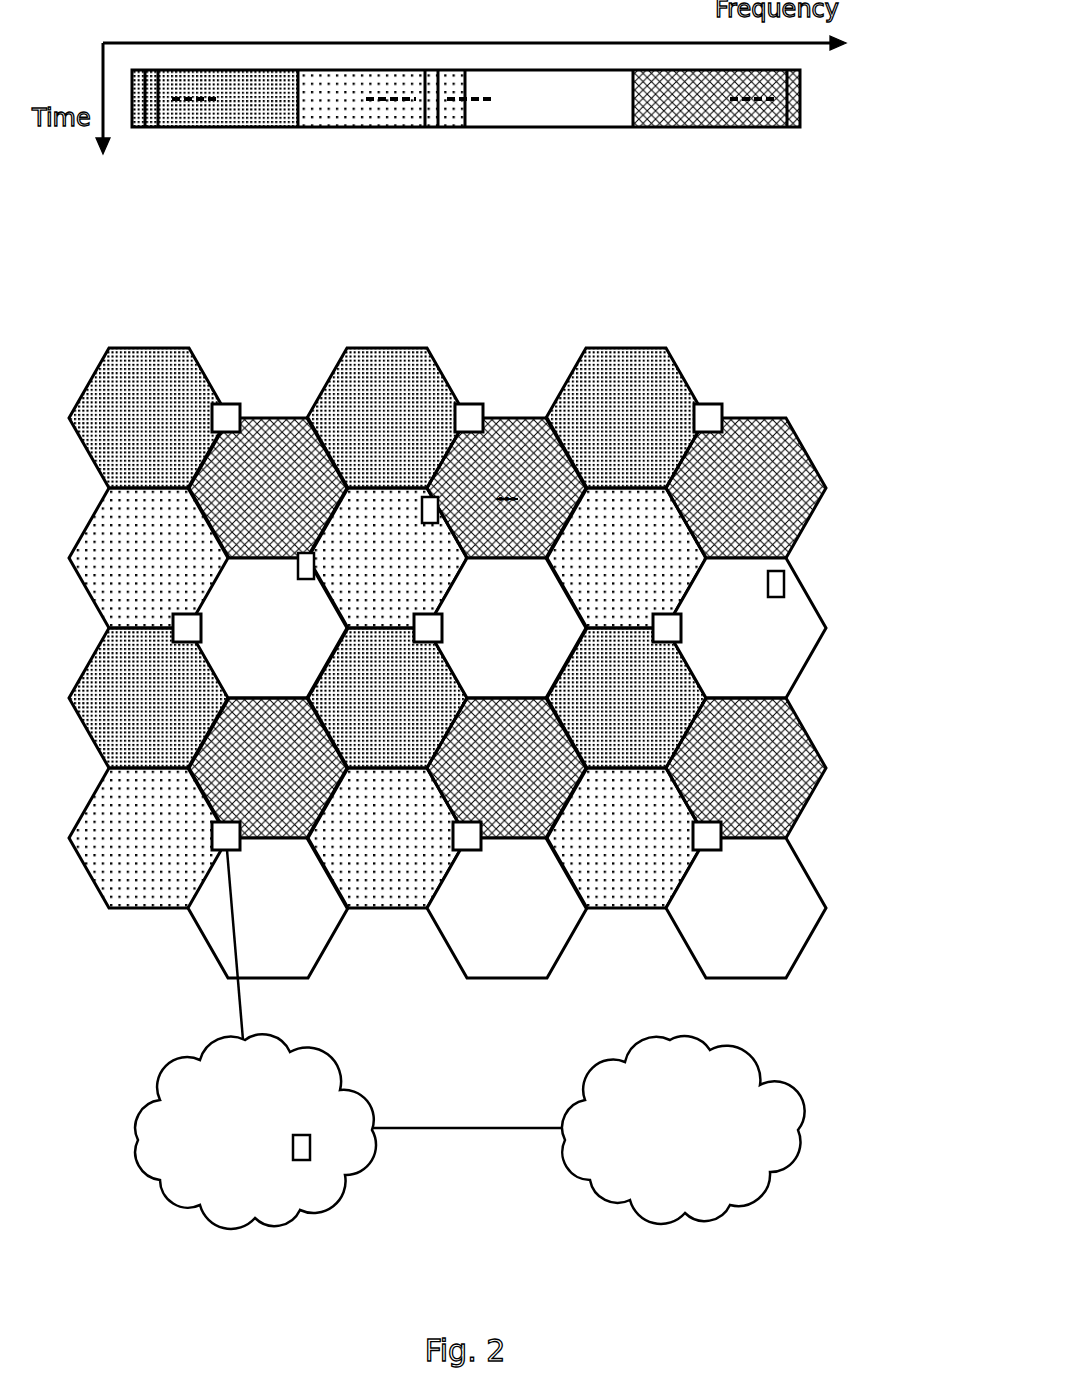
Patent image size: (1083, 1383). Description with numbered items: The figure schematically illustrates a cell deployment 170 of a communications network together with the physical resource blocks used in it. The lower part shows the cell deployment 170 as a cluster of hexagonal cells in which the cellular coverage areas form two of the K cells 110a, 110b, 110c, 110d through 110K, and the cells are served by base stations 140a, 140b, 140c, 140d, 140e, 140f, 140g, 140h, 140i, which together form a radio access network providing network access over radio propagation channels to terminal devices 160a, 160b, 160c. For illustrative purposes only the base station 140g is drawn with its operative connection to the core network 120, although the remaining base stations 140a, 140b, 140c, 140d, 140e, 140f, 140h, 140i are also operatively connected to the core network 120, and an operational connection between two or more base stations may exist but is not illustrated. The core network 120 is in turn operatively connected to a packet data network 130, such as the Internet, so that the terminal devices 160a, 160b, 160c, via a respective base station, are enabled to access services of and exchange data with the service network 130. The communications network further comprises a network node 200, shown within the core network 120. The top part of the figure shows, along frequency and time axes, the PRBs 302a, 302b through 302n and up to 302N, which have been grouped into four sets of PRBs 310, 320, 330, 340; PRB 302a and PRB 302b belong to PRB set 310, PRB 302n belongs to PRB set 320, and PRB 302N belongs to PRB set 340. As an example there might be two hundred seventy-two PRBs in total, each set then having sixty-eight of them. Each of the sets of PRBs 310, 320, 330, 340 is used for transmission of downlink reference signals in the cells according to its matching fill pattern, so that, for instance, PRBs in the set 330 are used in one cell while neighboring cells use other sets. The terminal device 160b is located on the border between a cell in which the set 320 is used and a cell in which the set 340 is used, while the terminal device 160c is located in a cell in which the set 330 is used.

The cell 110a is at (120, 432).
The cell 110b is at (360, 432).
The cell 110c is at (600, 432).
The cell 110d is at (239, 502).
The cell 110K is at (718, 921).
The core network 120 is at (207, 1127).
The packet data network 130 is at (661, 1149).
The base station 140a is at (236, 421).
The base station 140b is at (479, 421).
The base station 140c is at (718, 421).
The base station 140d is at (197, 631).
The base station 140e is at (438, 631).
The base station 140f is at (677, 631).
The base station 140g is at (236, 839).
The base station 140h is at (477, 839).
The base station 140i is at (717, 839).
The terminal device 160a is at (298, 568).
The terminal device 160b is at (422, 512).
The terminal device 160c is at (768, 586).
The cell deployment 170 is at (828, 335).
The network node 200 is at (293, 1148).
The PRB 302a is at (137, 98).
The PRB 302b is at (156, 98).
The PRB 302n is at (431, 98).
The PRB 302N is at (793, 106).
The PRB set 310 is at (132, 140).
The PRB set 320 is at (298, 140).
The PRB set 330 is at (465, 140).
The PRB set 340 is at (800, 140).